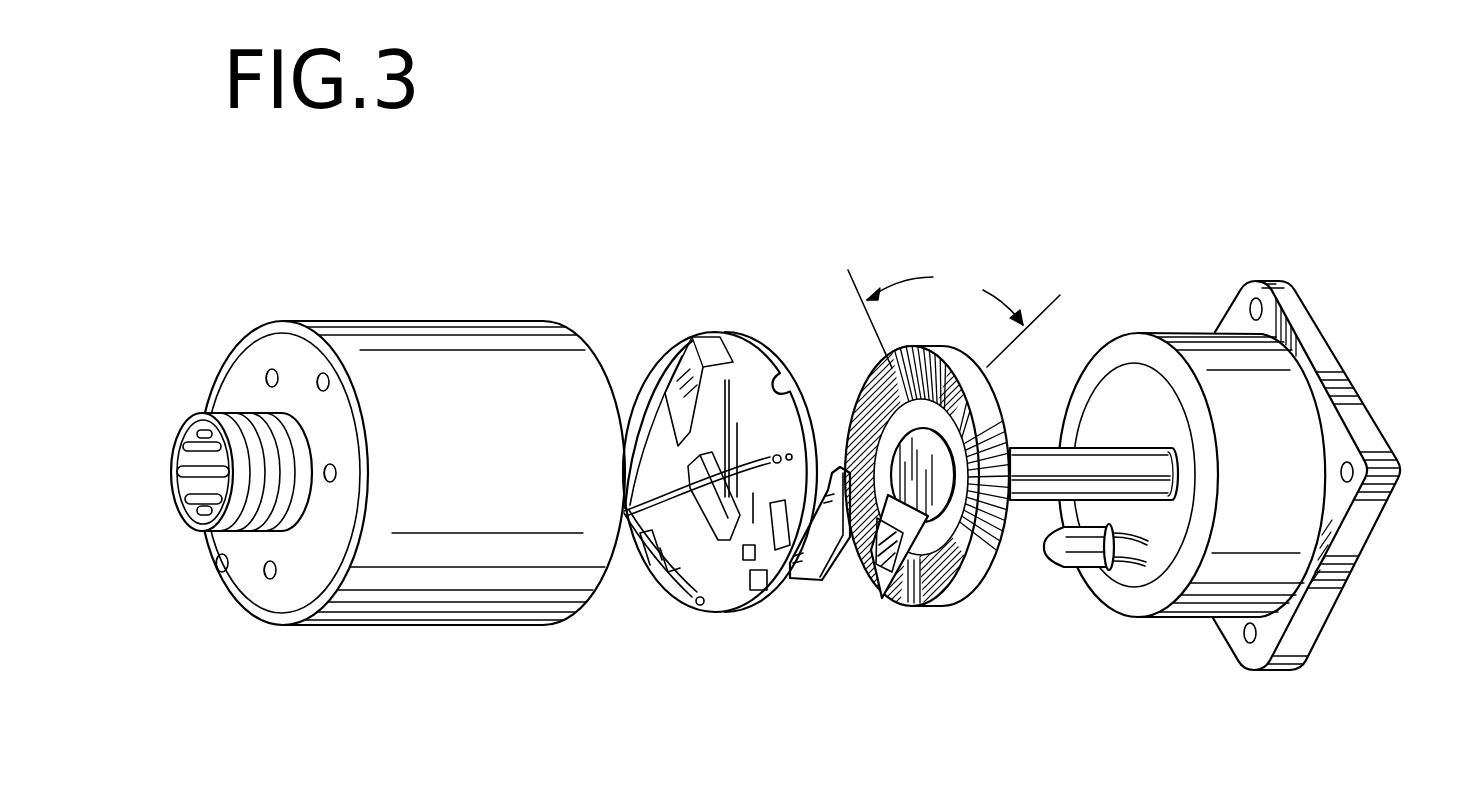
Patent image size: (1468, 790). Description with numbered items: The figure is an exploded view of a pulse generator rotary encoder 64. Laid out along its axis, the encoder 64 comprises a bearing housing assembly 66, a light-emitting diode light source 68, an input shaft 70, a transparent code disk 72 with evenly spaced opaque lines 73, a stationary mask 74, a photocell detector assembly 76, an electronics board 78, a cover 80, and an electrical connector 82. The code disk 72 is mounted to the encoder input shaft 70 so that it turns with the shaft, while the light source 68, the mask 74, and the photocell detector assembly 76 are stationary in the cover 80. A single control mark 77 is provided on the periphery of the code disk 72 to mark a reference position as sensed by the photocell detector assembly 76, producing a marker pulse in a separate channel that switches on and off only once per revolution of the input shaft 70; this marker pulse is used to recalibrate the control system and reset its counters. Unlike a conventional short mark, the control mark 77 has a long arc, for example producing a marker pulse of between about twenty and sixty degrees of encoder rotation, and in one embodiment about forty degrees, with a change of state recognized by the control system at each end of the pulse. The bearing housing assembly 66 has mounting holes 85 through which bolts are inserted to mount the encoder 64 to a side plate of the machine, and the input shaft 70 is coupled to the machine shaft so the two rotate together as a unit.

The encoder 64 is at (1352, 242).
The bearing housing assembly 66 is at (1173, 620).
The light-emitting diode light source 68 is at (1052, 548).
The input shaft 70 is at (1033, 483).
The transparent code disk 72 is at (1000, 392).
The opaque lines 73 is at (947, 378).
The stationary mask 74 is at (873, 598).
The photocell detector assembly 76 is at (823, 582).
The control mark 77 is at (867, 383).
The electronics board 78 is at (720, 615).
The cover 80 is at (438, 625).
The electrical connector 82 is at (172, 508).
The mounting holes 85 is at (1252, 302).